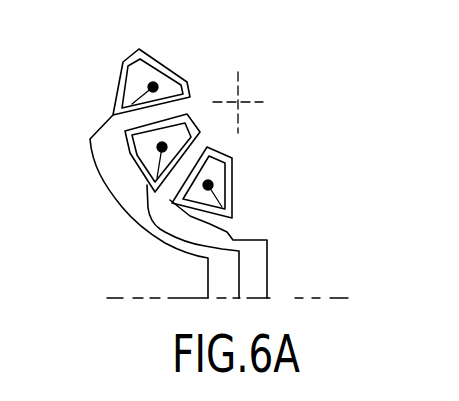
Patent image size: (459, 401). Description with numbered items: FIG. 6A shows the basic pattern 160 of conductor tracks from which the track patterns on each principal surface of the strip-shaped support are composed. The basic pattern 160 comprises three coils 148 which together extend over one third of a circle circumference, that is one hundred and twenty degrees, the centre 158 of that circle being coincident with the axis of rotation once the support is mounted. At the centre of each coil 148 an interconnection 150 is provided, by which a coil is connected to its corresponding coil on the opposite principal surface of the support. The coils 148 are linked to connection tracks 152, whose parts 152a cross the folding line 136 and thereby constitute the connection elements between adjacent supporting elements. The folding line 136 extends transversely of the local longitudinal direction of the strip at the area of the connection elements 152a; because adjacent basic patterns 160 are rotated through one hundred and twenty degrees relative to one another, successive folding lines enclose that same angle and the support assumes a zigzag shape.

The folding line 136 is at (122, 298).
The second coil 148 is at (165, 67).
The interconnection 150 is at (148, 86).
The connection track 152 is at (151, 231).
The connection element 152a is at (240, 268).
The centre 158 is at (241, 100).
The basic pattern 160 is at (296, 117).